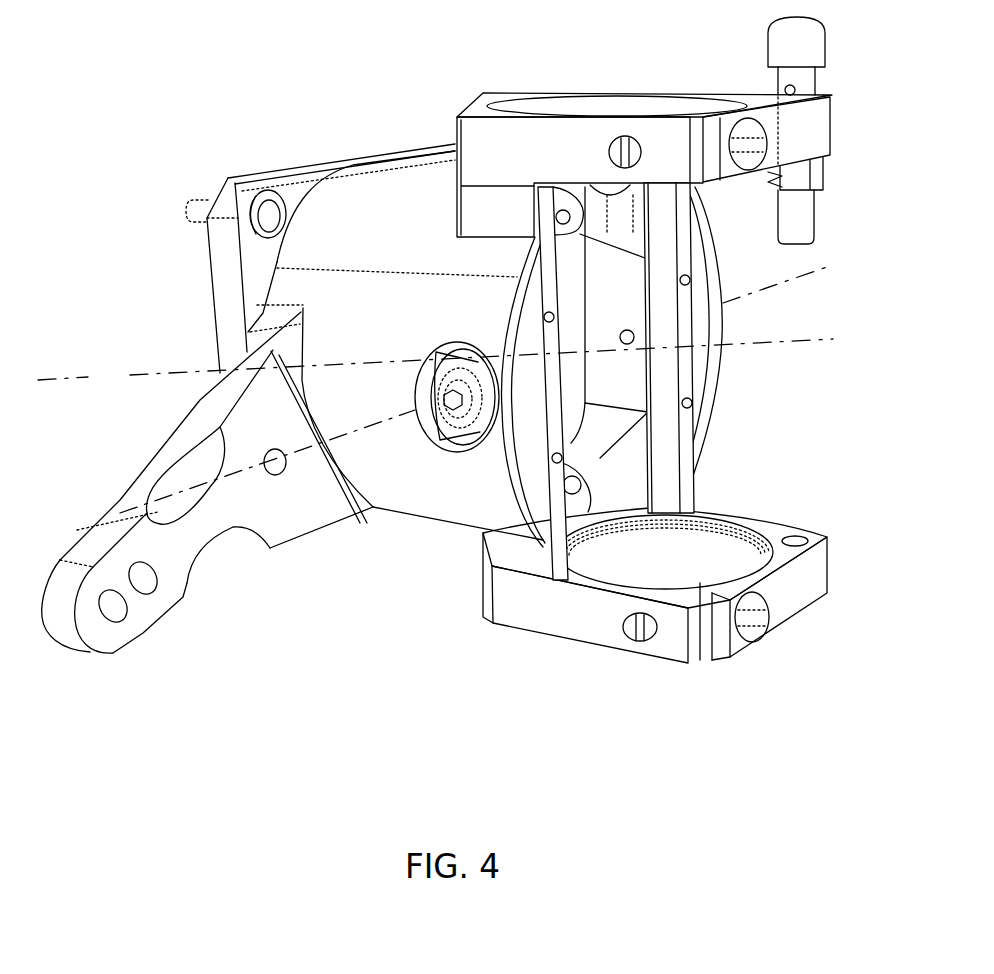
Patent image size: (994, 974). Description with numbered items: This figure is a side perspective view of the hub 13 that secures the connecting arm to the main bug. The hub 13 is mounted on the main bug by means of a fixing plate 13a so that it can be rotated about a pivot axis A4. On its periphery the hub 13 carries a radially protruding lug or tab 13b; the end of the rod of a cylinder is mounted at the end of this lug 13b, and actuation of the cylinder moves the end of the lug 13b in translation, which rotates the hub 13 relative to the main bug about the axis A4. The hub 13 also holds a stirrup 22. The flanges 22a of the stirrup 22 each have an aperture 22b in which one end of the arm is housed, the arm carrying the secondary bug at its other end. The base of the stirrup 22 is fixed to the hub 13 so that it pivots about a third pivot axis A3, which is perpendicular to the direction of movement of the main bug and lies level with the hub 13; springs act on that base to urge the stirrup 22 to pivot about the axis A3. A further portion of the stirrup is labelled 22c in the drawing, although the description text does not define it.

The hub 13 is at (383, 173).
The fixing plate 13a is at (293, 187).
The protruding lug 13b is at (193, 412).
The stirrup 22 is at (648, 368).
The flanges 22a is at (538, 612).
The aperture 22b is at (650, 482).
The ring bore portion of clamp 22c is at (700, 572).
The third pivot axis A3 is at (794, 278).
The pivot axis A4 is at (459, 345).